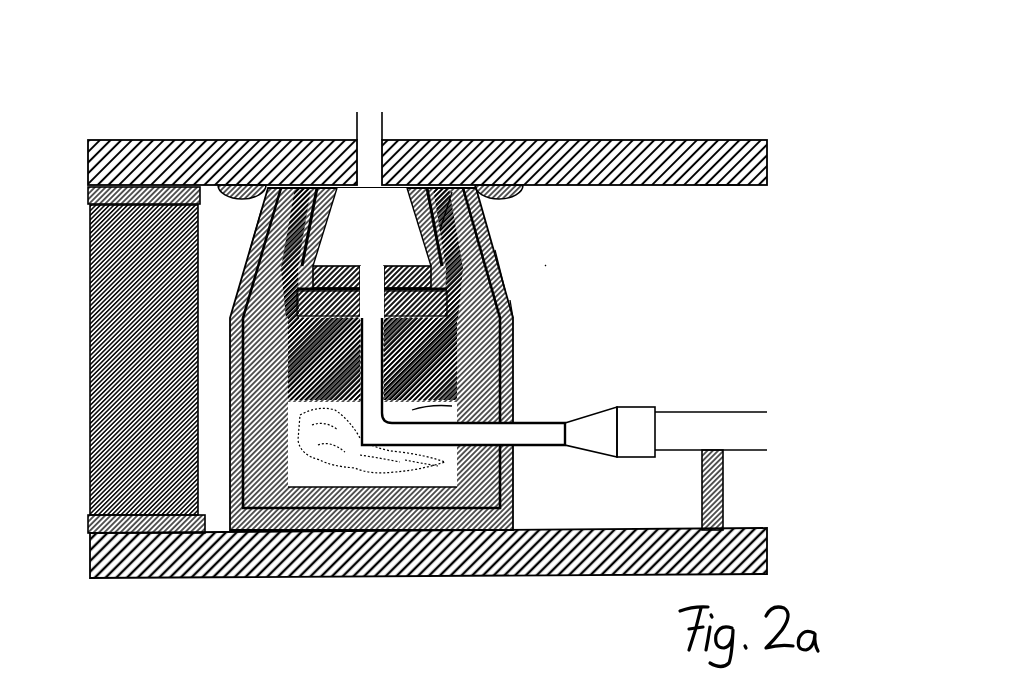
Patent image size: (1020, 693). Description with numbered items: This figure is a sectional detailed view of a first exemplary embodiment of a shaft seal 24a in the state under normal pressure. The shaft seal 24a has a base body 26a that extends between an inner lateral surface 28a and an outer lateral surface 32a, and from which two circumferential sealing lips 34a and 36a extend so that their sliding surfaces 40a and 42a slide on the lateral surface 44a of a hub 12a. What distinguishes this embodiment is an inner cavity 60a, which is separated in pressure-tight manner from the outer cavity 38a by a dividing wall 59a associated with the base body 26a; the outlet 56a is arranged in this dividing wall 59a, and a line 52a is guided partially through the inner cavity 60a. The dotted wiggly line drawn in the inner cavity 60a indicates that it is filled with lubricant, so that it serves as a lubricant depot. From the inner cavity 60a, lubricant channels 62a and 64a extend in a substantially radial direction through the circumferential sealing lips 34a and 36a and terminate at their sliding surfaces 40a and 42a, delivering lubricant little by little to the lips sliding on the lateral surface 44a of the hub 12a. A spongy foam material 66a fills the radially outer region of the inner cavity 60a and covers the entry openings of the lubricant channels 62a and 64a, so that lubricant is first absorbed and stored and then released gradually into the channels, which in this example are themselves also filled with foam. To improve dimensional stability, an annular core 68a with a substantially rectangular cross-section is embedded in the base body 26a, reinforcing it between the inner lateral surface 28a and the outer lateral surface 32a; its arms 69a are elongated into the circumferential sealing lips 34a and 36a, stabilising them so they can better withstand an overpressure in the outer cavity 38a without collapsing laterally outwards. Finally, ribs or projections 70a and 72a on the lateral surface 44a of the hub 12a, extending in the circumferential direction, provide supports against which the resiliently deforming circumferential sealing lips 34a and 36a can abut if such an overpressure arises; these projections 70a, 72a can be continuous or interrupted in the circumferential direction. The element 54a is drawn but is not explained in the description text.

The hub 12a is at (148, 172).
The inner lateral surface 28a is at (341, 537).
The shaft seal 24a is at (548, 262).
The base body 26a is at (513, 323).
The outer lateral surface 32a is at (333, 263).
The circumferential sealing lip 34a is at (440, 195).
The circumferential sealing lip 36a is at (312, 192).
The outer cavity 38a is at (387, 245).
The sliding surface 40a is at (402, 195).
The sliding surface 42a is at (345, 170).
The lateral surface 44a is at (722, 190).
The line 52a is at (510, 435).
The channel wall 54a is at (519, 452).
The outlet 56a is at (384, 263).
The dividing wall 59a is at (507, 293).
The inner cavity 60a is at (513, 405).
The lubricant channel 62a is at (503, 270).
The lubricant channel 64a is at (253, 263).
The foam material 66a is at (513, 362).
The annular core 68a is at (410, 517).
The arms 69a is at (493, 253).
The projection 70a is at (500, 187).
The projection 72a is at (240, 197).